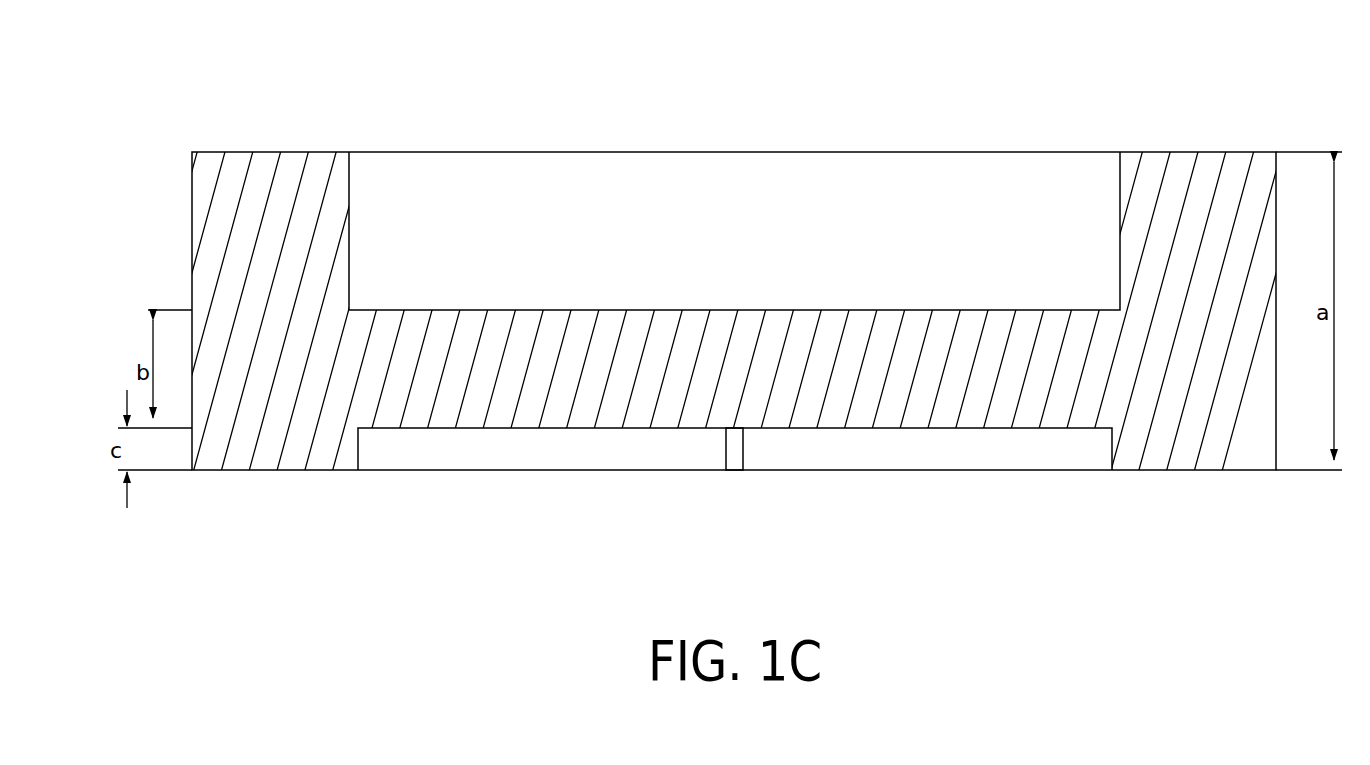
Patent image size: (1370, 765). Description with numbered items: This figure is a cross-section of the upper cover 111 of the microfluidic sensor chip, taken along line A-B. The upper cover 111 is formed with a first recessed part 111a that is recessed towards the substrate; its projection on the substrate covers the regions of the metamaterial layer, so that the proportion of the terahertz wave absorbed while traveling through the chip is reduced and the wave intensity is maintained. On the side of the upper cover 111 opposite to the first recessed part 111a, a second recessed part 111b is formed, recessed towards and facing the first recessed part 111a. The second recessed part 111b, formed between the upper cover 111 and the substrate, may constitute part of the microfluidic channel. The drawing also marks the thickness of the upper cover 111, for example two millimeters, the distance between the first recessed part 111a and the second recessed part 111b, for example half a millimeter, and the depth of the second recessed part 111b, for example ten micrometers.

The upper cover 111 is at (135, 86).
The first recessed part 111a is at (980, 215).
The second recessed part 111b is at (580, 446).